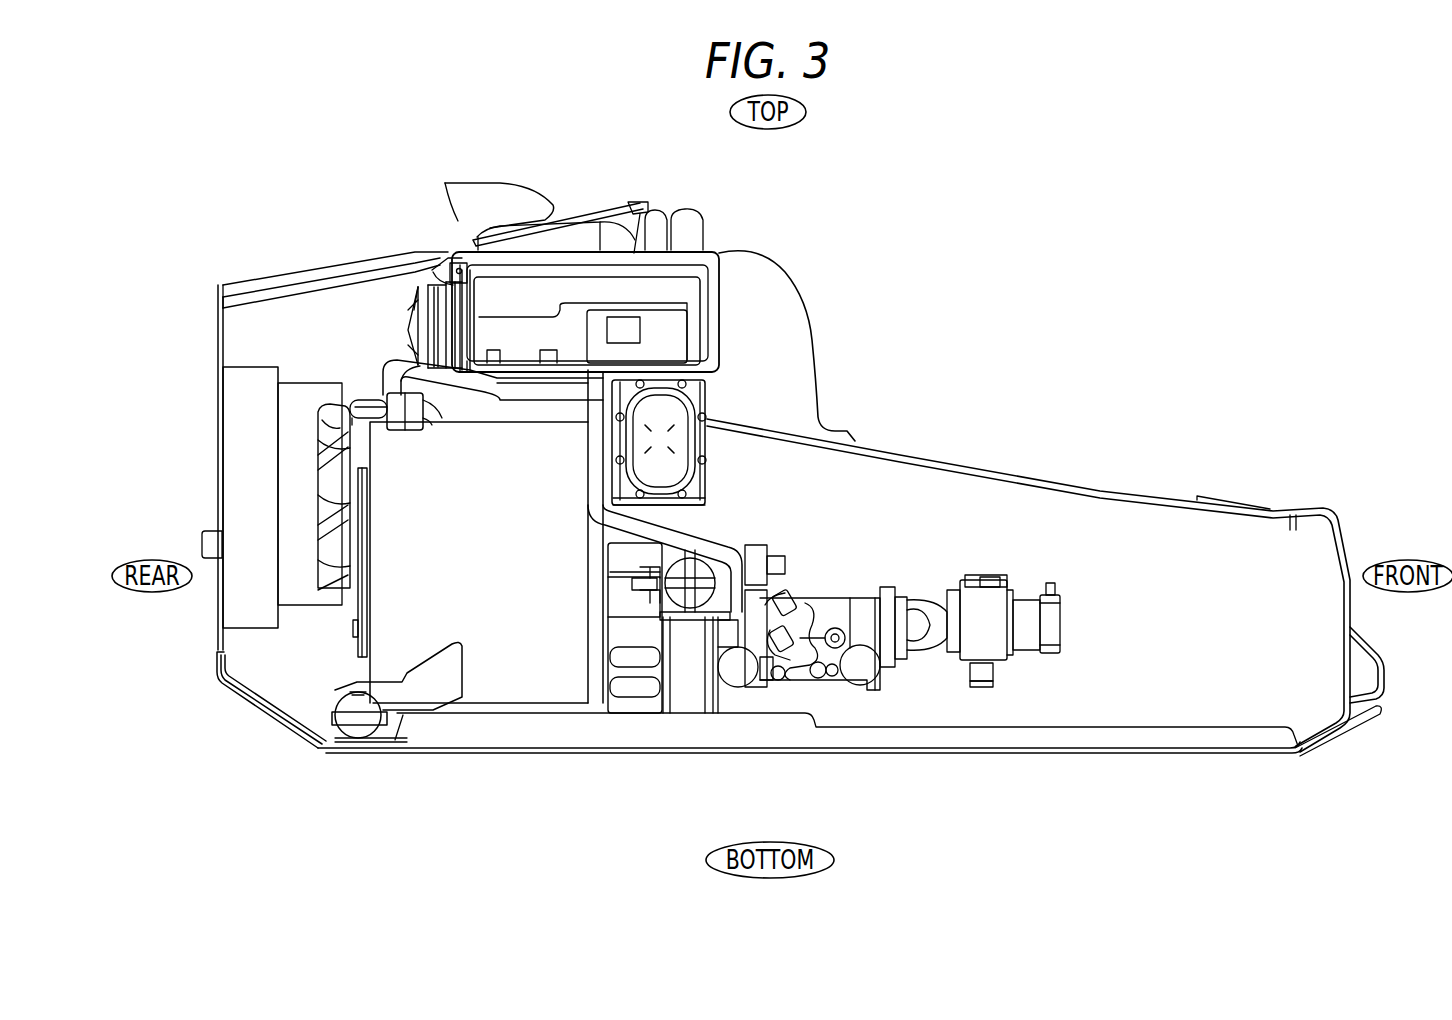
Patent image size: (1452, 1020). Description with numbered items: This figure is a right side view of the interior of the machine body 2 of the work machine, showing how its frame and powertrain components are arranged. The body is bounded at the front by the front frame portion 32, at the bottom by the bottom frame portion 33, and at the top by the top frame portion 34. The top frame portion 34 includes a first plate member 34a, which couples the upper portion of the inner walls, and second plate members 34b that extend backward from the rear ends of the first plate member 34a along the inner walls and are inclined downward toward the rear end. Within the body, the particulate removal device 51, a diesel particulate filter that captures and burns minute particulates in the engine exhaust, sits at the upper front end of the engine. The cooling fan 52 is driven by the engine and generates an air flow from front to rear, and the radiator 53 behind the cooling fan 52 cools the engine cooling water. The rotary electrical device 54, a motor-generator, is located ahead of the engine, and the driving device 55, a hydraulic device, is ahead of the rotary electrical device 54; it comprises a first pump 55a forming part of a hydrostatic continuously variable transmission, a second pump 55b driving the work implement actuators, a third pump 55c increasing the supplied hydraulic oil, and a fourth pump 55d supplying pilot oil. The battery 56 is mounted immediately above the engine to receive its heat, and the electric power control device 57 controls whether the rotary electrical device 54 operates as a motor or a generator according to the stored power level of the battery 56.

The machine body 2 is at (989, 430).
The front frame portion 32 is at (1371, 644).
The bottom frame portion 33 is at (1013, 774).
The top frame portion 34 is at (636, 239).
The first plate member 34a is at (672, 212).
The second plate member 34b is at (302, 282).
The particulate removal device 51 is at (680, 415).
The cooling fan 52 is at (331, 426).
The radiator 53 is at (236, 466).
The rotary electrical device 54 is at (801, 557).
The driving device 55 is at (889, 660).
The first pump 55a is at (841, 616).
The second pump 55b is at (921, 600).
The third pump 55c is at (983, 603).
The fourth pump 55d is at (1037, 613).
The battery 56 is at (607, 190).
The electric power control device 57 is at (703, 305).